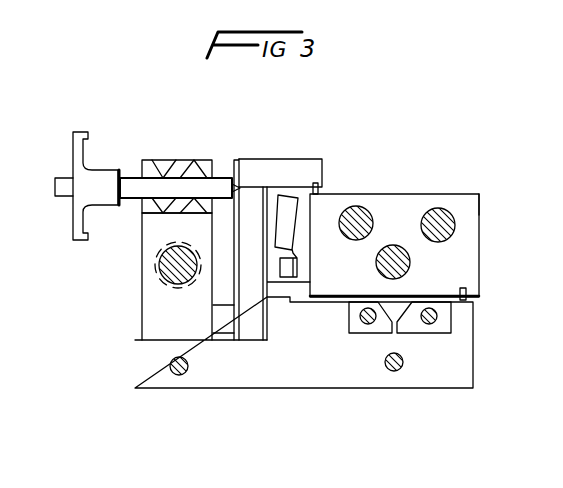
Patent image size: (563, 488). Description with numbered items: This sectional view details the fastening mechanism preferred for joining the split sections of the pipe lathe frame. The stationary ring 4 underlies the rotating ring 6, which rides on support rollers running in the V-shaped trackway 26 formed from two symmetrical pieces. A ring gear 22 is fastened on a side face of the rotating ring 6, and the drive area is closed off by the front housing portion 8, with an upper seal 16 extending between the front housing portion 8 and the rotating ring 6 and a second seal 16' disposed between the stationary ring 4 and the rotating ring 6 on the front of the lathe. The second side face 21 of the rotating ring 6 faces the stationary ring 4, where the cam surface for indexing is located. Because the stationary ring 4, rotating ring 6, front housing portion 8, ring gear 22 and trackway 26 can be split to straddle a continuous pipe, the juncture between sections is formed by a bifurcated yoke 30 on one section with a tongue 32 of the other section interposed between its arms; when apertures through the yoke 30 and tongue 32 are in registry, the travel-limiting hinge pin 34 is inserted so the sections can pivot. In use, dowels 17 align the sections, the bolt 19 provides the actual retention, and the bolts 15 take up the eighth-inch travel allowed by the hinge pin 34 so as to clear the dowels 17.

The stationary ring 4 is at (466, 352).
The rotating ring 6 is at (471, 236).
The front housing portion 8 is at (302, 168).
The bolts 15 is at (434, 211).
The upper seal 16 is at (342, 180).
The second seal 16' is at (495, 293).
The dowels 17 is at (410, 263).
The bolt 19 is at (175, 272).
The second side face 21 is at (481, 201).
The ring gear 22 is at (287, 207).
The trackway 26 is at (350, 327).
The bifurcated yoke 30 is at (205, 160).
The tongue 32 is at (175, 214).
The hinge pin 34 is at (140, 190).